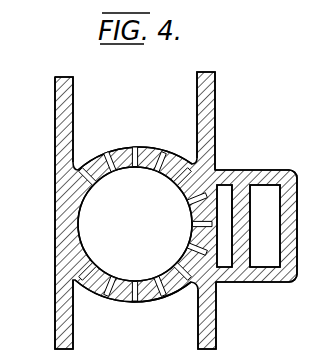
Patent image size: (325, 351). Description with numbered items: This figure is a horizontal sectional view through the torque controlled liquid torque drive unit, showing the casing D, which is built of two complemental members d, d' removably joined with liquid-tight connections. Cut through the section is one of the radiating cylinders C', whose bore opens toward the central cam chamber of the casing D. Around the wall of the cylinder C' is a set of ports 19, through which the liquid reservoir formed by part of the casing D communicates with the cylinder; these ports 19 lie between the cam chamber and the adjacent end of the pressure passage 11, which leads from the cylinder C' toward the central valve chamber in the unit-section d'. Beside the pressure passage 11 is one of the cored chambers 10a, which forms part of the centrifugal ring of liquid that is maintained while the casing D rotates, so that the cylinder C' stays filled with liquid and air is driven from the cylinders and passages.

The casing D is at (216, 101).
The complemental casing member d is at (48, 213).
The complemental casing member (unit-section) d' is at (223, 210).
The cylinder C' is at (133, 210).
The ports 19 is at (134, 147).
The cored chambers 10a is at (236, 186).
The pressure passage 11 is at (266, 252).